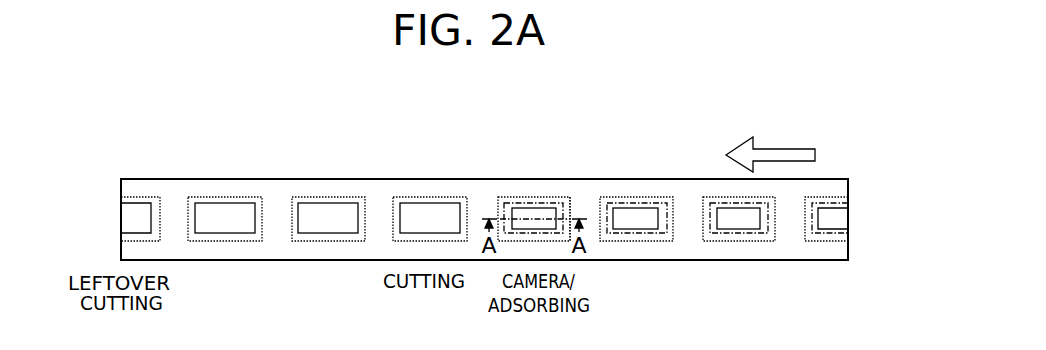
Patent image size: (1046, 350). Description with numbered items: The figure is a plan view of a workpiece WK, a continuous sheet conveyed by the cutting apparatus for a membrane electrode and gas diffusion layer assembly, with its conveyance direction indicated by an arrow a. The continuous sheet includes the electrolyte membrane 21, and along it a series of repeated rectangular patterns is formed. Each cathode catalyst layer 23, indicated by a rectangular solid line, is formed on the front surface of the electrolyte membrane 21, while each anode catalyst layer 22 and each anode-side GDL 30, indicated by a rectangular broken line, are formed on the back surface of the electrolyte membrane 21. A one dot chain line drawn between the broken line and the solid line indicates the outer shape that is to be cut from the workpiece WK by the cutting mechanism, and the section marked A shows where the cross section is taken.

The workpiece WK is at (517, 179).
The electrolyte membrane 21 is at (586, 200).
The anode catalyst layer 22 is at (647, 256).
The anode-side GDL 30 is at (640, 243).
The cathode catalyst layer 23 is at (650, 210).
The arrow indicating conveyance direction a is at (784, 148).